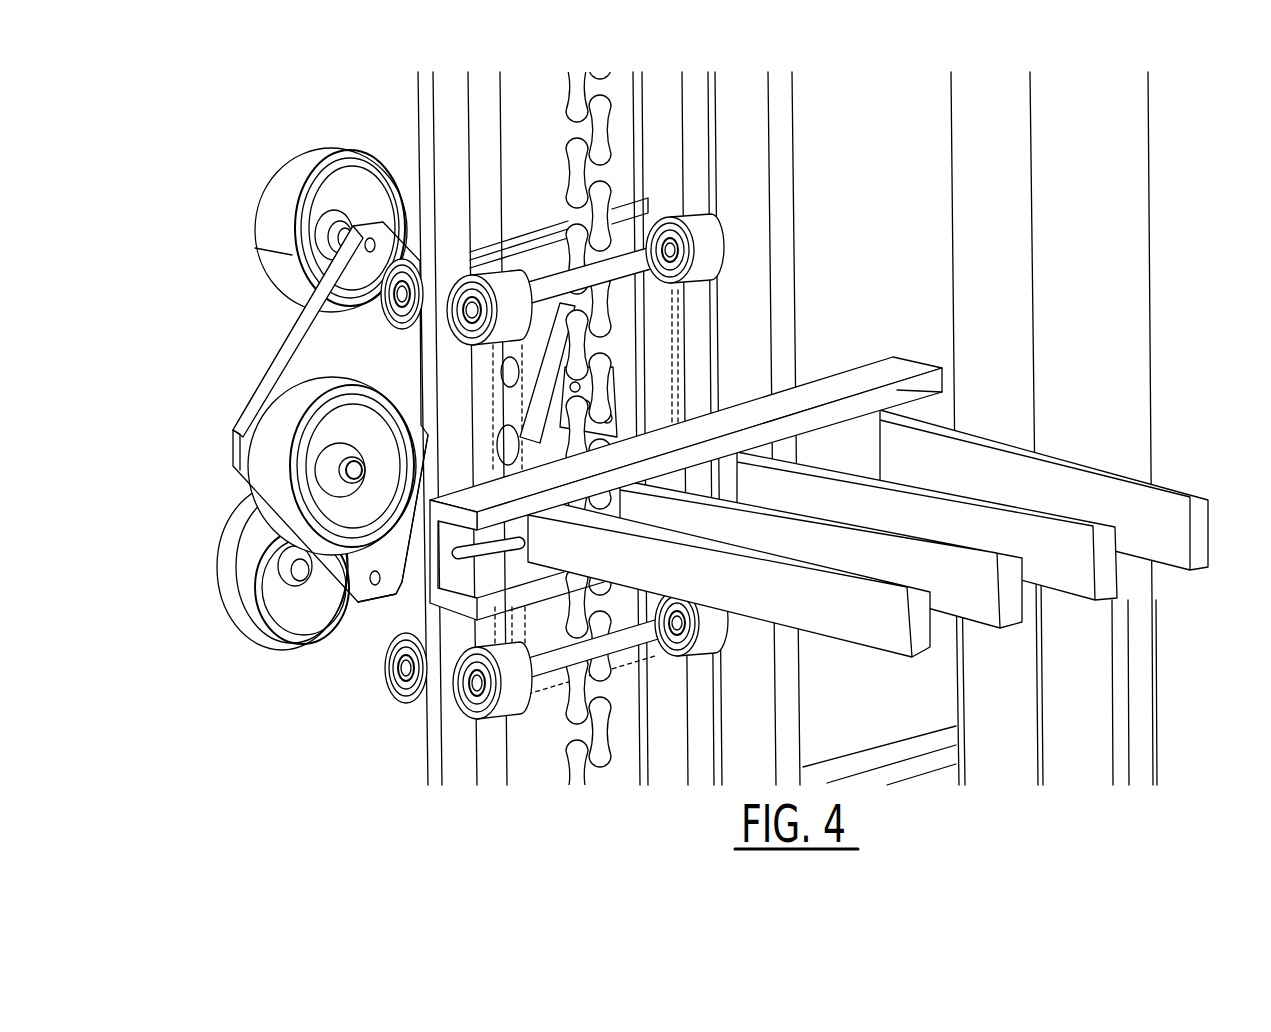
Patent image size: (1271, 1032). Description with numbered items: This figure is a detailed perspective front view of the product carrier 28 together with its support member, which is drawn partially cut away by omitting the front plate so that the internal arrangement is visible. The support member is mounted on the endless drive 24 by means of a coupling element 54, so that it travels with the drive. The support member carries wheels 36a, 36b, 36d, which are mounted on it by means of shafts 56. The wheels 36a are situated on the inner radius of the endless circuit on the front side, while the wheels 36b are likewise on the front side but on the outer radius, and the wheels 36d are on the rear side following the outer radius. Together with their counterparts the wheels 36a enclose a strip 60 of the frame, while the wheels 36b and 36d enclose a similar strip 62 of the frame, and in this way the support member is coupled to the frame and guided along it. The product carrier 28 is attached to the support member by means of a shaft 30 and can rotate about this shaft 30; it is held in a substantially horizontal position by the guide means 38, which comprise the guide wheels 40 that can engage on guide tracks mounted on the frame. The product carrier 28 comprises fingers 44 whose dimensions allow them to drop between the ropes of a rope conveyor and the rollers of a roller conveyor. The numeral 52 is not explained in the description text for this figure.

The endless drive 24 is at (576, 130).
The product carrier 28 is at (1013, 432).
The shaft 30 is at (400, 571).
The wheels 36a is at (722, 258).
The wheels 36b is at (468, 345).
The wheels 36d is at (388, 300).
The guide means 38 is at (236, 372).
The guide wheels 40 is at (286, 194).
The fingers 44 is at (927, 623).
The rail 52 is at (525, 250).
The coupling element 54 is at (583, 357).
The shafts 56 is at (668, 232).
The strip 60 is at (660, 126).
The strip 62 is at (463, 777).